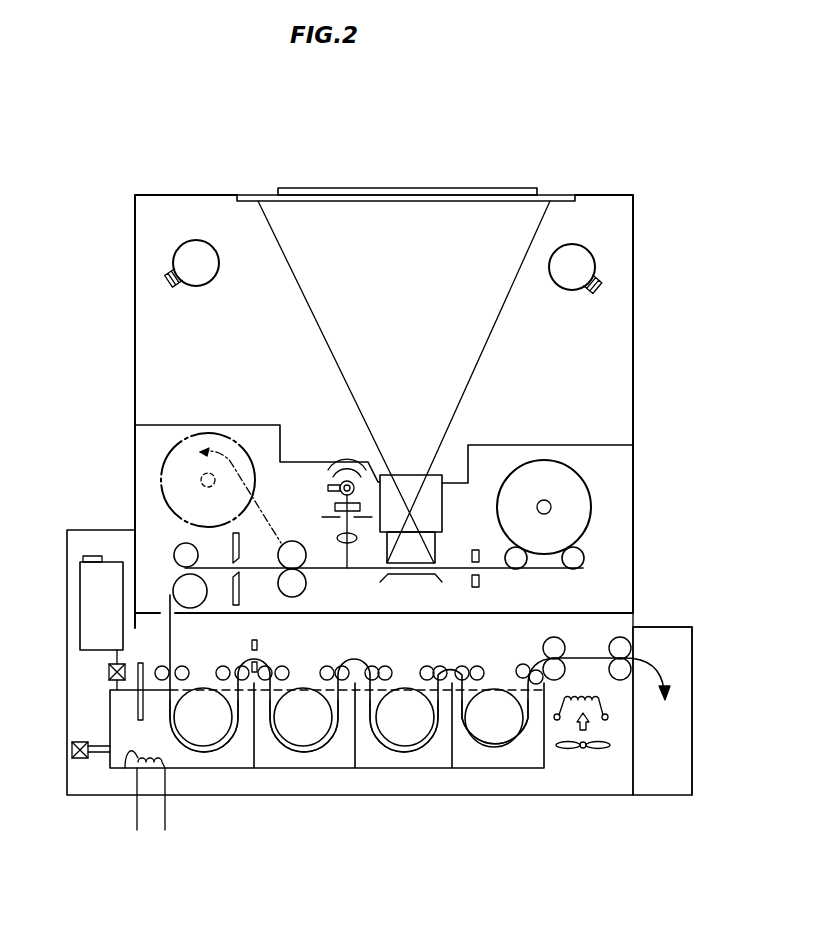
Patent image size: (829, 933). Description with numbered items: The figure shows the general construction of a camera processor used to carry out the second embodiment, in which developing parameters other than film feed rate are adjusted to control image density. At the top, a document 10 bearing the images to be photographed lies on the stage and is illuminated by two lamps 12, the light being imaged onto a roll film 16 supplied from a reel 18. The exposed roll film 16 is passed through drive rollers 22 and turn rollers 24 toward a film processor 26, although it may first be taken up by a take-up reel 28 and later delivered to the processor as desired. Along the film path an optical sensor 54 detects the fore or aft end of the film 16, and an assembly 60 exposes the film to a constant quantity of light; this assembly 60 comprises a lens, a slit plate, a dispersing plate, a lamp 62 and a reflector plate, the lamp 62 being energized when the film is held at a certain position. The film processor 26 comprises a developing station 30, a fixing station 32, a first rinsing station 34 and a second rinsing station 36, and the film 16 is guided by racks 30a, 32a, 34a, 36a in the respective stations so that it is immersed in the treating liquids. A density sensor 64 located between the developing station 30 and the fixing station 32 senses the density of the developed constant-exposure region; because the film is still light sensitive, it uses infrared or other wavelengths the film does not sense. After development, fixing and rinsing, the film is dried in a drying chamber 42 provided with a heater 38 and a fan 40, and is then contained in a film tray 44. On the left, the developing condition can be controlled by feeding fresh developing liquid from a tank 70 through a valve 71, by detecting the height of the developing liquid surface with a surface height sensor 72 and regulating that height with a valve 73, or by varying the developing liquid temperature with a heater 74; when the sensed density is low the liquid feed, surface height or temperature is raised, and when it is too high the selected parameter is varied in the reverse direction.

The document 10 is at (508, 188).
The lamps 12 is at (208, 283).
The roll film 16 is at (555, 570).
The reel 18 is at (586, 500).
The drive rollers 22 is at (306, 591).
The turn rollers 24 is at (200, 608).
The film processor 26 is at (470, 795).
The take-up reel 28 is at (163, 461).
The developing station 30 is at (240, 770).
The rack 30a is at (196, 746).
The fixing station 32 is at (342, 770).
The rack 32a is at (296, 746).
The first rinsing station 34 is at (438, 770).
The rack 34a is at (398, 746).
The second rinsing station 36 is at (528, 770).
The rack 36a is at (494, 747).
The heater 38 is at (620, 760).
The fan 40 is at (605, 760).
The drying chamber 42 is at (580, 775).
The film tray 44 is at (674, 763).
The optical sensor 54 is at (483, 548).
The assembly for exposing the film 60 is at (312, 508).
The lamp 62 is at (347, 470).
The density sensor 64 is at (258, 641).
The tank 70 is at (80, 628).
The valve 71 is at (109, 672).
The surface height sensor 72 is at (138, 700).
The valve 73 is at (78, 742).
The heater 74 is at (125, 768).